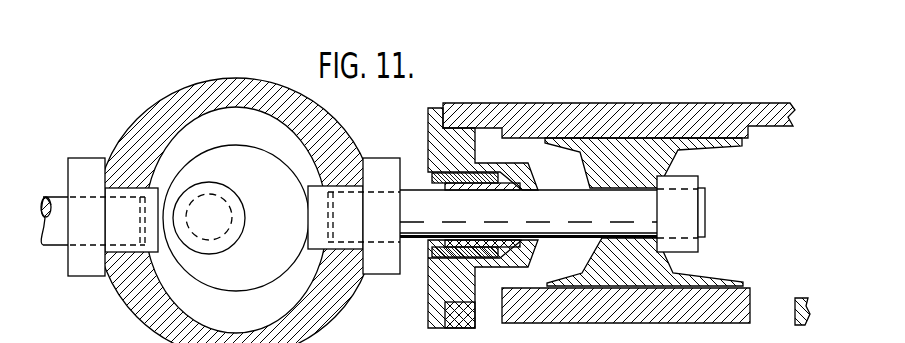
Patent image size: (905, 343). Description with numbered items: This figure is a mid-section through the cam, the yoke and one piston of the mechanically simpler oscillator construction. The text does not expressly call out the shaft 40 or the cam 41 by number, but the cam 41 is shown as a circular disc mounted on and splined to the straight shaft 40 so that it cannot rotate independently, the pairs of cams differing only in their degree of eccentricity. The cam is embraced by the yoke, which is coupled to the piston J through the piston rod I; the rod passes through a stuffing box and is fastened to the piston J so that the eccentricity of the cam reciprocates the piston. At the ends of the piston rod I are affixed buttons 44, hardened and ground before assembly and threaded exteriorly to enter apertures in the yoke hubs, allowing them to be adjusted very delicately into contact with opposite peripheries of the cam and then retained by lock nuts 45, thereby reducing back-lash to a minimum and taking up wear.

The bore of eccentric disc 40 is at (236, 196).
The eccentric disc 41 is at (228, 294).
The button 44 is at (310, 183).
The lock nut 45 is at (89, 279).
The piston rod I is at (566, 202).
The piston J is at (643, 163).